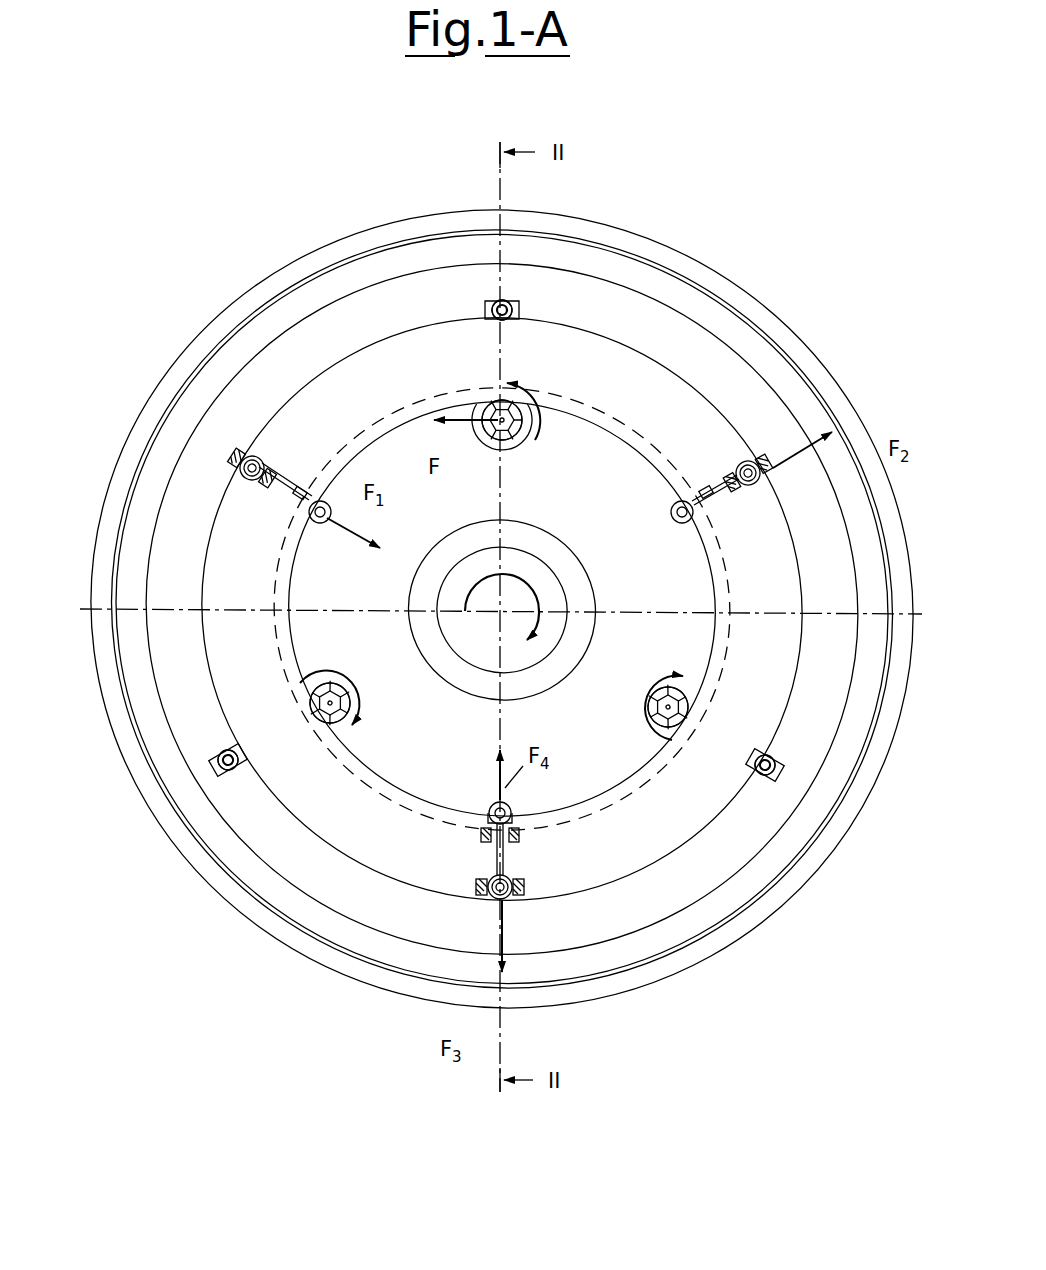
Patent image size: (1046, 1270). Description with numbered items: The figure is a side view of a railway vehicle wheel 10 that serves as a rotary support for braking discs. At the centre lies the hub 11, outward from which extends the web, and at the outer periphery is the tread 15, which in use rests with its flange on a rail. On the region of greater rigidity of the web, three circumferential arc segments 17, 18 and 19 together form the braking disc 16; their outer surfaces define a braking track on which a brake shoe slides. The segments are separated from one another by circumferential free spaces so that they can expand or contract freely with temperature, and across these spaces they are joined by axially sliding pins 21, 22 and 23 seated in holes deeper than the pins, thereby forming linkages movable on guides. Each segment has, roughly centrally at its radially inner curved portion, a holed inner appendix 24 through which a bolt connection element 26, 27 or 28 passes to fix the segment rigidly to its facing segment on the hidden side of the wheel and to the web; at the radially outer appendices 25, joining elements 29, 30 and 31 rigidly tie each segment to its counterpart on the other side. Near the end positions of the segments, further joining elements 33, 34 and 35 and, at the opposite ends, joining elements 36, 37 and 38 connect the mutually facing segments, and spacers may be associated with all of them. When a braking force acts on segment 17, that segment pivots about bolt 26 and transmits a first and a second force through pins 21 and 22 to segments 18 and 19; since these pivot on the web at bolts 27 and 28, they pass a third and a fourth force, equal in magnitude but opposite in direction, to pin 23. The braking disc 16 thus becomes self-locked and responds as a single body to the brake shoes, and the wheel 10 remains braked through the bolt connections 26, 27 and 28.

The railway vehicle wheel 10 is at (769, 207).
The hub 11 is at (425, 633).
The tread 15 is at (578, 990).
The braking disc 16 is at (599, 338).
The circumferential arc segment 17 is at (662, 416).
The circumferential arc segment 18 is at (502, 617).
The circumferential arc segment 19 is at (502, 608).
The axially sliding element or pin 21 is at (306, 490).
The axially sliding element or pin 22 is at (707, 493).
The axially sliding element or pin 23 is at (493, 875).
The inner appendix 24 is at (494, 436).
The radially outer appendix 25 is at (516, 305).
The bolt connection element 26 is at (511, 428).
The bolt connection element 27 is at (645, 710).
The bolt connection element 28 is at (346, 708).
The joining element 29 is at (498, 302).
The joining element 30 is at (780, 770).
The joining element 31 is at (229, 772).
The joining element 33 is at (239, 467).
The joining element 34 is at (776, 484).
The joining element 35 is at (518, 896).
The joining element 36 is at (322, 525).
The joining element 37 is at (681, 525).
The joining element 38 is at (511, 815).